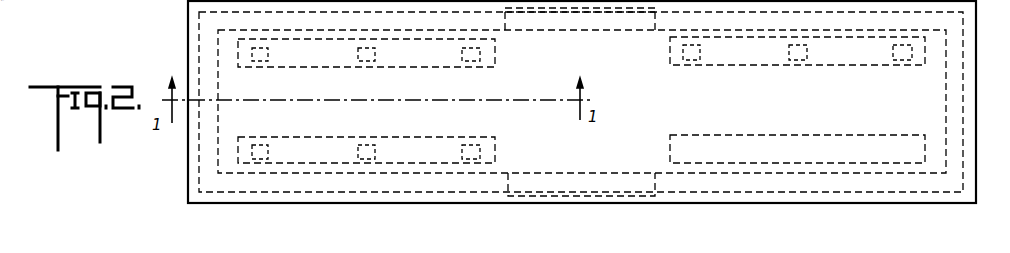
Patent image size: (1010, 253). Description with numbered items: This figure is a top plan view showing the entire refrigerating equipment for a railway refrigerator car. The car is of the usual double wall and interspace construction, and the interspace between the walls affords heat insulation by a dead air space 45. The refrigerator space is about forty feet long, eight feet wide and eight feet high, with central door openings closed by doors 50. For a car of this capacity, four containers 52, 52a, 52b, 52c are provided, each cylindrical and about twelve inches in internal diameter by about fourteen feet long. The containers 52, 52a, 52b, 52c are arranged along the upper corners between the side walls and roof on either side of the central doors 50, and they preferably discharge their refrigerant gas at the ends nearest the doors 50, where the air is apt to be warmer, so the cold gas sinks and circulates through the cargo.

The dead air space 45 is at (100, 1).
The doors 50 is at (610, 10).
The container 52 is at (497, 66).
The container 52a is at (690, 66).
The container 52b is at (770, 129).
The container 52c is at (483, 130).